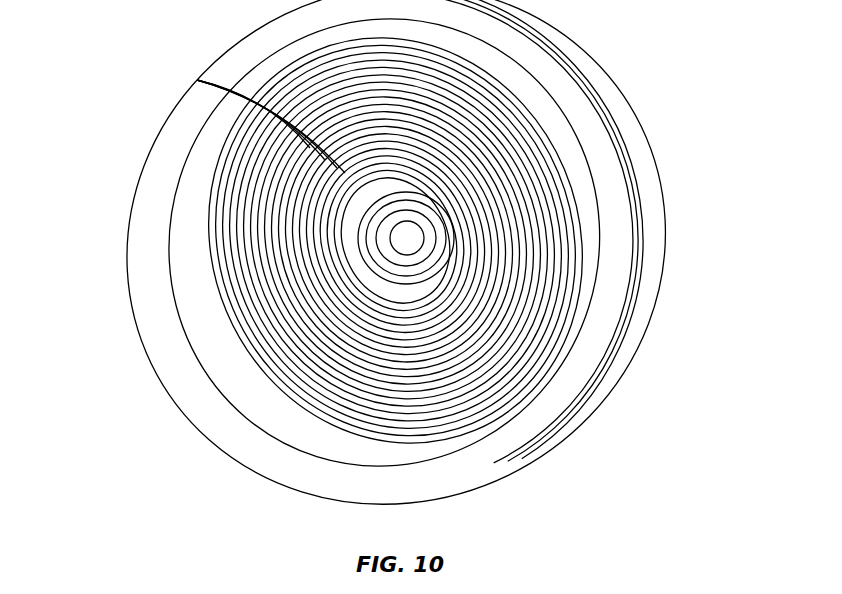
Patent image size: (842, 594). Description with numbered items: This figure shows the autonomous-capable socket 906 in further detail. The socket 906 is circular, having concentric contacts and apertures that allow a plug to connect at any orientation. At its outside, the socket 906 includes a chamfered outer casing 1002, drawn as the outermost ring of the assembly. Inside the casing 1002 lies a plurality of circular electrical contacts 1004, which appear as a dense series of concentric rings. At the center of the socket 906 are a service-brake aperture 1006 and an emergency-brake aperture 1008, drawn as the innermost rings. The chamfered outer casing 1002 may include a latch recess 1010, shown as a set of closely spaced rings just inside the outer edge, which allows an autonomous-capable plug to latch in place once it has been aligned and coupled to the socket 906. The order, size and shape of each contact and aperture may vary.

The autonomous-capable socket 906 is at (648, 166).
The chamfered outer casing 1002 is at (142, 218).
The circular electrical contacts 1004 is at (197, 80).
The service-brake aperture 1006 is at (423, 289).
The emergency-brake aperture 1008 is at (425, 247).
The latch recess 1010 is at (604, 98).